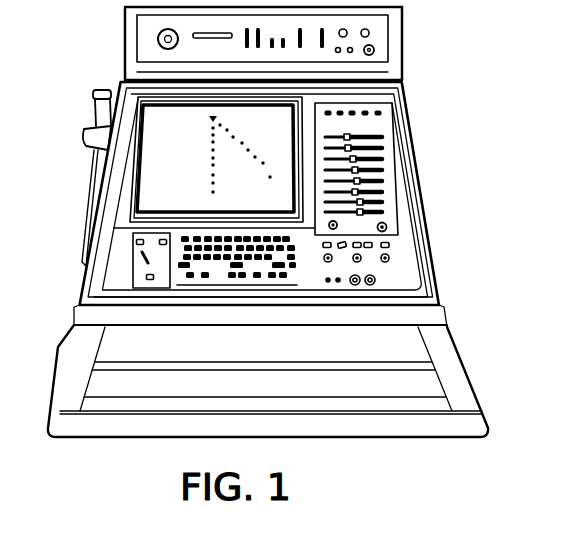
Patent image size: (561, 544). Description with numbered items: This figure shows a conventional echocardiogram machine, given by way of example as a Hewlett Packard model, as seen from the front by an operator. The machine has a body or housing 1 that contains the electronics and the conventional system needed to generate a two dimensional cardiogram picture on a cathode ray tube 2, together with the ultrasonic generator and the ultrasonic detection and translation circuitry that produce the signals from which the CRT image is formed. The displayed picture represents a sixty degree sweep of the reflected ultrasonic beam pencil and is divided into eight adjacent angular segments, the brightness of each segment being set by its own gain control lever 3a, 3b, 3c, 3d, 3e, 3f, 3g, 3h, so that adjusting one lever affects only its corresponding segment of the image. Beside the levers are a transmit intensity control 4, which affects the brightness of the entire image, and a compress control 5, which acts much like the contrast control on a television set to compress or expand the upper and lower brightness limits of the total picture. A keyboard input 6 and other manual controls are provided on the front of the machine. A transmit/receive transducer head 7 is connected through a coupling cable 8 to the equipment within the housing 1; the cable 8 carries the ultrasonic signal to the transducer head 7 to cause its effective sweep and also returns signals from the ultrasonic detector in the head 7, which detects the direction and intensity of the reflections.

The housing 1 is at (438, 289).
The cathode ray tube 2 is at (150, 117).
The gain control lever 3a is at (349, 136).
The gain control lever 3b is at (352, 148).
The gain control lever 3c is at (355, 159).
The gain control lever 3d is at (358, 170).
The gain control lever 3e is at (360, 181).
The gain control lever 3f is at (358, 192).
The gain control lever 3g is at (380, 204).
The gain control lever 3h is at (380, 214).
The transmit intensity control 4 is at (338, 225).
The compress control 5 is at (383, 231).
The keyboard input 6 is at (120, 263).
The transmit/receive transducer head 7 is at (92, 104).
The coupling cable 8 is at (92, 162).